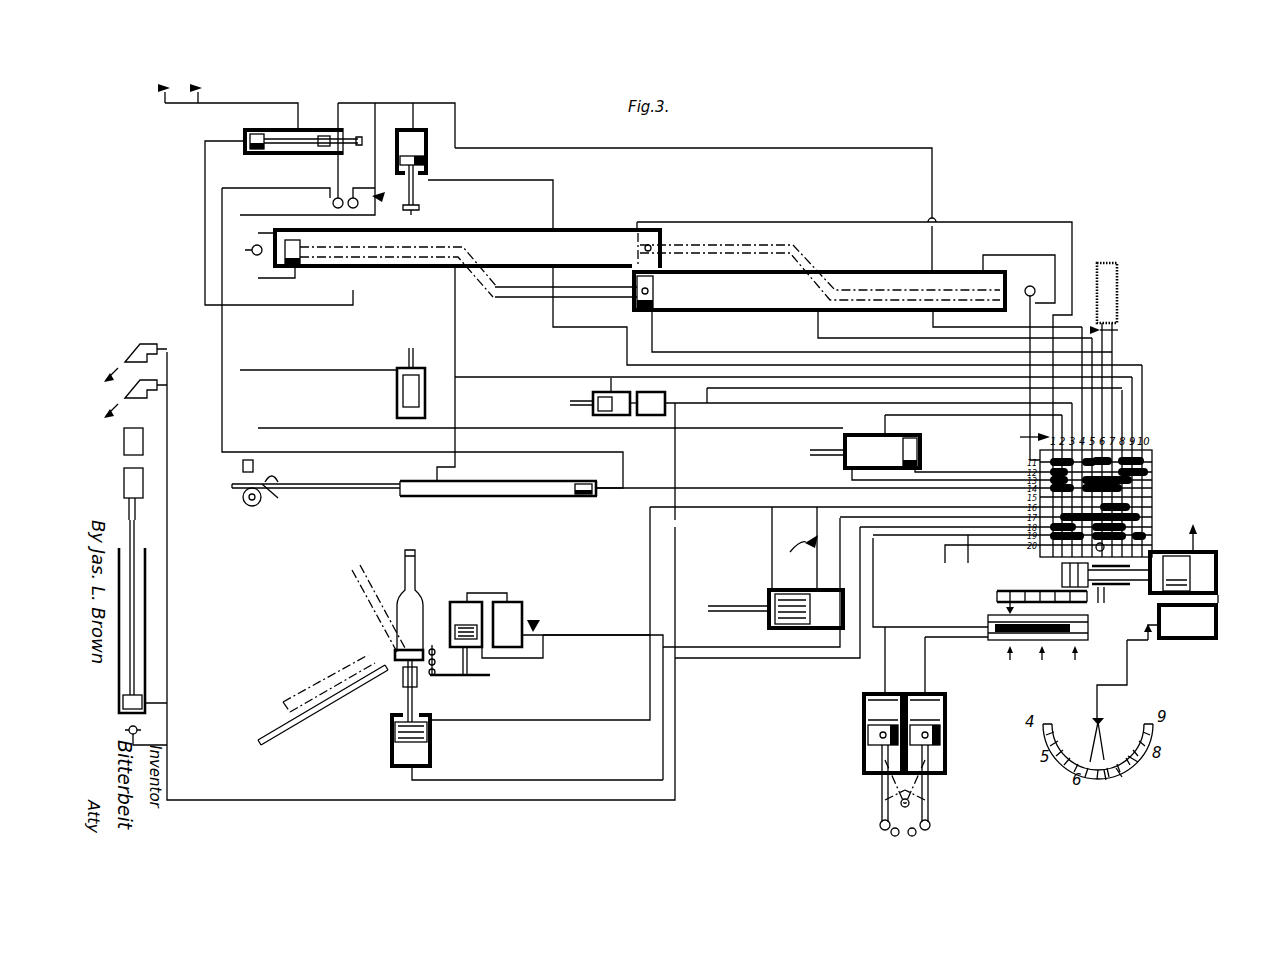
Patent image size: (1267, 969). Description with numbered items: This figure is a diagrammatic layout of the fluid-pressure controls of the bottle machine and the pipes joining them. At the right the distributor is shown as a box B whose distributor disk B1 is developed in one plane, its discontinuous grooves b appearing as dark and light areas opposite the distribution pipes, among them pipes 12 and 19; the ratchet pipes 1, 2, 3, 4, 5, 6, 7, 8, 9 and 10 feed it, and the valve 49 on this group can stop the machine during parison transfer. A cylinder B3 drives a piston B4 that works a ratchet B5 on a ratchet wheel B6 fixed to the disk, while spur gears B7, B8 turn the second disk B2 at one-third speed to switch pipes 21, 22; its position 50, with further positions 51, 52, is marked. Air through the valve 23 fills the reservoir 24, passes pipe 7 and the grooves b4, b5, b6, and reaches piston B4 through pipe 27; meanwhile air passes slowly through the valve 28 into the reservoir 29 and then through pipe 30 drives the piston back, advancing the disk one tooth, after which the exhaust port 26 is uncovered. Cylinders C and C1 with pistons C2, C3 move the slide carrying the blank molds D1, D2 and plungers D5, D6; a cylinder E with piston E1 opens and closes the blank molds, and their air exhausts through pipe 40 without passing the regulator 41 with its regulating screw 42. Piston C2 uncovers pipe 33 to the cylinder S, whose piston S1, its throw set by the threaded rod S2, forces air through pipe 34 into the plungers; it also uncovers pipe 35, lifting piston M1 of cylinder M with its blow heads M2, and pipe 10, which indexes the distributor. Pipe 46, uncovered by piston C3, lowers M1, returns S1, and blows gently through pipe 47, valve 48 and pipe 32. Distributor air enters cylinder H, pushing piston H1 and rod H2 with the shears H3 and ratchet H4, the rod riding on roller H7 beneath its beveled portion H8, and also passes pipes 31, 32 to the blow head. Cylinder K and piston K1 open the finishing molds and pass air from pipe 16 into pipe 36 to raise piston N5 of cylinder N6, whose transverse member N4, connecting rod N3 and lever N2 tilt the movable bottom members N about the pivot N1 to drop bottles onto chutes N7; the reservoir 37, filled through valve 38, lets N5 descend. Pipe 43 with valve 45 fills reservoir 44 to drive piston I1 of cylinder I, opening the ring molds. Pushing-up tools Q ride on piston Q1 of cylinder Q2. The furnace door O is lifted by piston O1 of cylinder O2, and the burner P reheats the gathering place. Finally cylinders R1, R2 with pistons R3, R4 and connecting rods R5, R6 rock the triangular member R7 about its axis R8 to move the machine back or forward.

The plunger D5 is at (156, 84).
The plunger D6 is at (209, 84).
The pipe 34 is at (231, 106).
The cylinder S is at (278, 158).
The piston S1 is at (257, 150).
The threaded rod S2 is at (337, 148).
The pipe 33 is at (365, 291).
The pipe 47 is at (298, 155).
The valve 48 is at (318, 160).
The vertical piston M1 is at (422, 140).
The cylinder M is at (425, 160).
The blow head M2 is at (419, 208).
The pipe 32 is at (322, 372).
The pipe 35 is at (501, 204).
The pipe 46 is at (746, 150).
The pipe 1 is at (848, 326).
The cylinder C is at (485, 230).
The piston C2 is at (302, 268).
The pipe 10 is at (552, 280).
The pipe 9 is at (452, 374).
The cylinder C1 is at (725, 280).
The piston C3 is at (655, 294).
The pipe 6 is at (882, 332).
The pipe 5 is at (946, 325).
The pipe 4 is at (997, 323).
The pipe 40 is at (1019, 269).
The regulating screw 42 is at (1045, 290).
The regulator 41 is at (1028, 298).
The reservoir 24 is at (1118, 284).
The valve 23 is at (1114, 331).
The valve 49 is at (798, 388).
The piston I1 is at (611, 385).
The cylinder I is at (593, 412).
The reservoir 44 is at (655, 416).
The pipe 3 is at (717, 411).
The valve 45 is at (845, 486).
The pipe 12 is at (782, 424).
The pipe 2 is at (885, 414).
The cylinder E is at (922, 442).
The piston E1 is at (920, 462).
The pipe 8 is at (422, 338).
The pipe 31 is at (607, 465).
The cylinder H is at (490, 497).
The piston H1 is at (583, 497).
The rod H2 is at (374, 490).
The shears H3 is at (243, 496).
The roller H7 is at (250, 506).
The ratchet H4 is at (278, 482).
The beveled portion H8 is at (282, 497).
The burner P is at (135, 377).
The pipe 19 is at (167, 752).
The door O is at (124, 486).
The cylinder O2 is at (147, 658).
The piston O1 is at (143, 705).
The stationary longitudinal pivot N1 is at (411, 600).
The inclined wooden chute N7 is at (318, 708).
The movable bottom member N is at (395, 653).
The transverse lever N2 is at (424, 646).
The pushing-up tool Q is at (403, 680).
The connecting rod N3 is at (434, 676).
The transverse member N4 is at (470, 677).
The vertical cylinder N6 is at (457, 600).
The piston N5 is at (470, 625).
The reservoir 37 is at (522, 608).
The valve 38 is at (540, 628).
The cylinder Q2 is at (432, 750).
The piston Q1 is at (395, 732).
The pipe 16 is at (515, 725).
The pipe 36 is at (672, 640).
The pipe 43 is at (803, 548).
The cylinder K is at (832, 630).
The piston K1 is at (792, 626).
The blank mold D1 is at (980, 564).
The blank mold D2 is at (970, 559).
The distributor disk B1 is at (1150, 504).
The circular discontinuous groove b is at (1142, 486).
The ratchet wheel B6 is at (1062, 574).
The ratchet B5 is at (1122, 584).
The spur gear B7 is at (1109, 606).
The piston B4 is at (1178, 553).
The cylinder B3 is at (1218, 570).
The exhaust port 26 is at (1204, 537).
The pipe 30 is at (1199, 617).
The reservoir 29 is at (1181, 655).
The valve 28 is at (1127, 672).
The pipe 27 is at (1128, 672).
The spur gear B8 is at (997, 596).
The pipe 21 is at (988, 622).
The pipe 22 is at (988, 642).
The second disk B2 is at (1088, 640).
The position 50 is at (1011, 664).
The port 51 is at (1043, 664).
The port 52 is at (1075, 664).
The cylinder R1 is at (864, 704).
The cylinder R2 is at (946, 706).
The piston R3 is at (868, 734).
The piston R4 is at (942, 736).
The connecting rod R5 is at (882, 790).
The connecting rod R6 is at (928, 790).
The pivotal axis R8 is at (900, 806).
The rocking member R7 is at (900, 835).
The box B is at (1140, 766).
The outwardly extending radial portion b5 is at (1092, 724).
The continuous circular groove b6 is at (1104, 720).
The circularly curved groove b4 is at (1108, 780).
The pipe 7 is at (1117, 785).